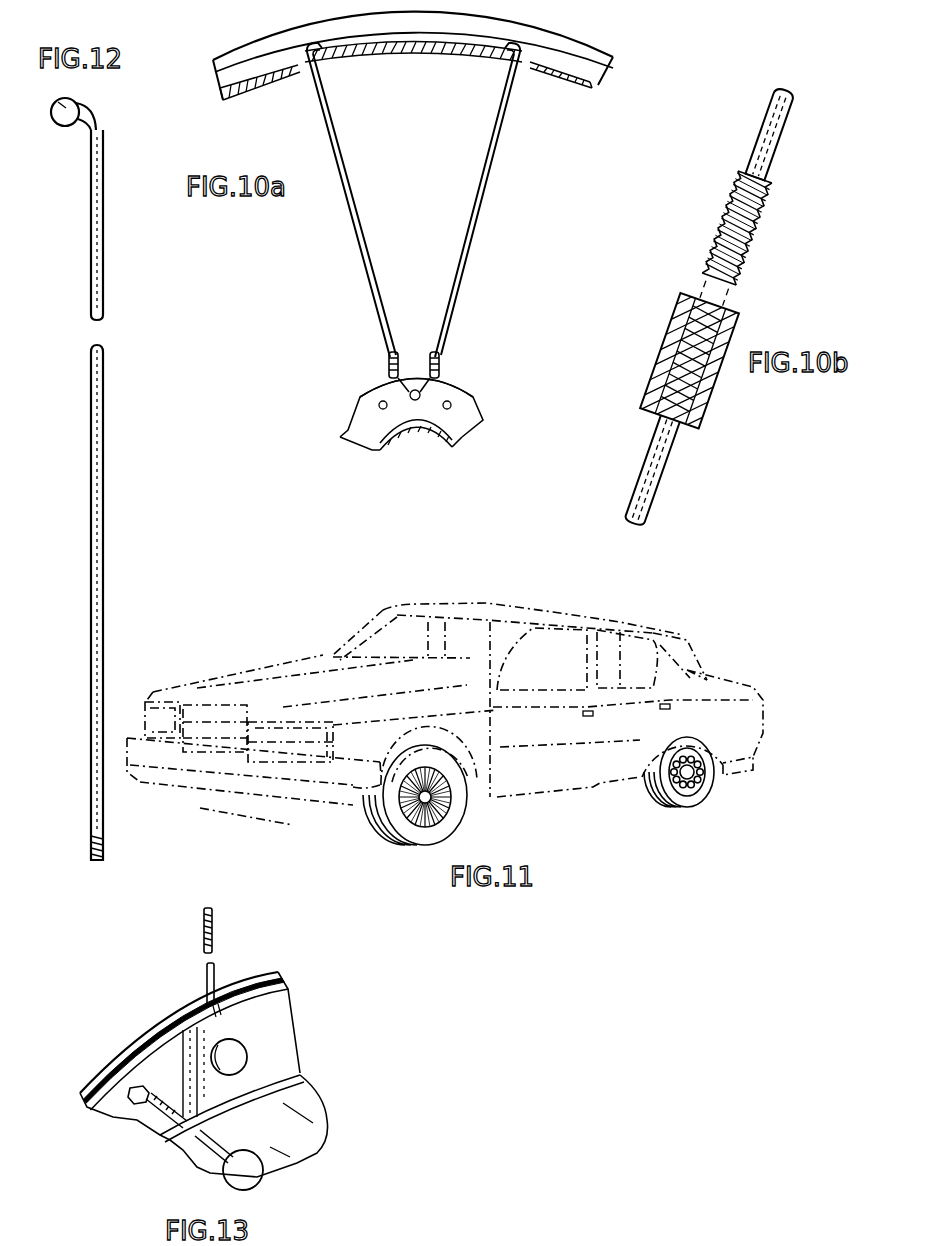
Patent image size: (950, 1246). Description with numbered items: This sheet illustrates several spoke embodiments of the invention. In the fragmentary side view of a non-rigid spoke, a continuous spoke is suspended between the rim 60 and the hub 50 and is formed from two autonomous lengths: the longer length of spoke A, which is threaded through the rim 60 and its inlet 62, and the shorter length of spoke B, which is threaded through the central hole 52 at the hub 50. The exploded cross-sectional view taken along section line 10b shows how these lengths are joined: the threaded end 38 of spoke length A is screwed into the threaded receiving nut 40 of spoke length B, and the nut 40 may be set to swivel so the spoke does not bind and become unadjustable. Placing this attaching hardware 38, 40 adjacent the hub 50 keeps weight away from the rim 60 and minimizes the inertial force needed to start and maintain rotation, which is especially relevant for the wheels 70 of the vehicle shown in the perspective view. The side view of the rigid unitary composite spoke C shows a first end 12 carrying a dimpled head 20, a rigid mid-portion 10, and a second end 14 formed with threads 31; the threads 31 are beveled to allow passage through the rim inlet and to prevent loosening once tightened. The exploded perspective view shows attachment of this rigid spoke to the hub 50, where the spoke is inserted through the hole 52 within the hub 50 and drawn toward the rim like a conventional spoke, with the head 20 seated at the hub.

In FIG. 12, the rigid mid-portion 10 is at (106, 430).
In FIG. 11, the rigid mid-portion 10 is at (448, 806).
In FIG. 13, the rigid mid-portion 10 is at (204, 982).
In FIG. 12, the first end 12 is at (106, 118).
In FIG. 12, the second end 14 is at (90, 826).
In FIG. 13, the second end 14 is at (203, 913).
In FIG. 12, the dimpled head 20 is at (78, 128).
In FIG. 13, the dimpled head 20 is at (237, 1041).
In FIG. 12, the threads 31 is at (103, 851).
In FIG. 13, the threads 31 is at (215, 933).
In FIG. 10A, the threaded end 38 is at (391, 358).
In FIG. 10B, the threaded end 38 is at (722, 224).
In FIG. 10A, the threaded receiving nut 40 is at (436, 364).
In FIG. 10B, the threaded receiving nut 40 is at (661, 358).
In FIG. 10A, the hub 50 is at (462, 436).
In FIG. 13, the hub 50 is at (180, 1157).
In FIG. 10A, the central hole 52 is at (452, 405).
In FIG. 13, the central hole 52 is at (137, 1106).
In FIG. 10A, the rim 60 is at (610, 62).
In FIG. 10A, the inlet 62 is at (300, 62).
In FIG. 11, the wheels 70 is at (397, 843).
In FIG. 10A, the longer length of spoke A is at (500, 178).
In FIG. 10B, the longer length of spoke A is at (762, 138).
In FIG. 10A, the shorter length of spoke B is at (380, 387).
In FIG. 10B, the shorter length of spoke B is at (648, 455).
In FIG. 12, the rigid unitary composite spoke C is at (104, 228).
In FIG. 10A, the section line 10b— 10b is at (380, 314).